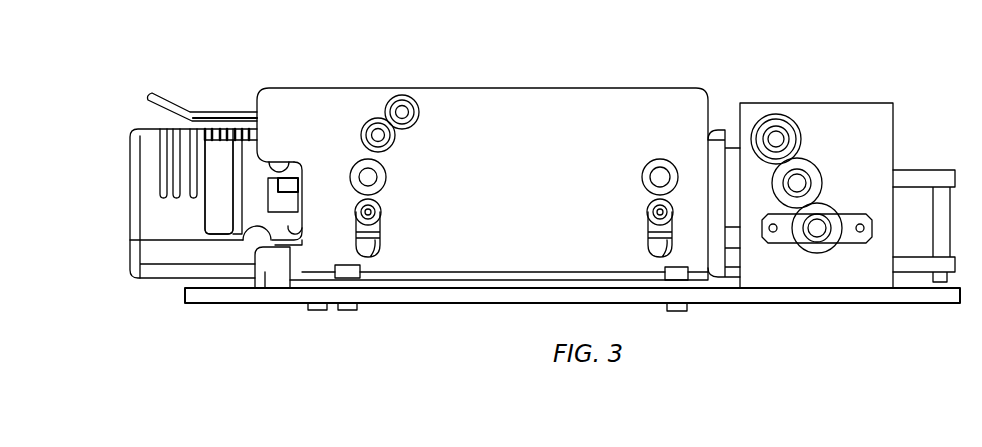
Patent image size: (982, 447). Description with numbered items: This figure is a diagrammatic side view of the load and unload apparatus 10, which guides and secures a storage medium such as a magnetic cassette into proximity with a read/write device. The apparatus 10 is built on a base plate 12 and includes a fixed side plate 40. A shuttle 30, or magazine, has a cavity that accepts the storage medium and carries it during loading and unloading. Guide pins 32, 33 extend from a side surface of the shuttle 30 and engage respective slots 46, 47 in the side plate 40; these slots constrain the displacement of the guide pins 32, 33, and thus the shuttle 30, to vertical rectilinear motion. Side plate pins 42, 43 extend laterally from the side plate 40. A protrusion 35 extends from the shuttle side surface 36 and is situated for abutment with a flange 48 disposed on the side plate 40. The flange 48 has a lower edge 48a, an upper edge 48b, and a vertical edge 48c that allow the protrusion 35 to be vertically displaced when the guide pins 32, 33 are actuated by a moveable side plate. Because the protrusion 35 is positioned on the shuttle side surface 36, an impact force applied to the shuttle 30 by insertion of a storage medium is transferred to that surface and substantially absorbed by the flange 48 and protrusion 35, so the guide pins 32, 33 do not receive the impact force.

The load and unload apparatus 10 is at (99, 184).
The base plate 12 is at (923, 303).
The shuttle 30 is at (200, 110).
The guide pin 32 is at (378, 208).
The guide pin 33 is at (649, 212).
The protrusion 35 is at (296, 178).
The shuttle side surface 36 is at (219, 153).
The fixed side plate 40 is at (654, 88).
The side plate pin 42 is at (388, 176).
The side plate pin 43 is at (641, 178).
The slot 46 is at (378, 244).
The slot 47 is at (649, 244).
The flange 48 is at (287, 249).
The lower edge 48a is at (243, 238).
The upper edge 48b is at (290, 164).
The vertical edge 48c is at (292, 227).